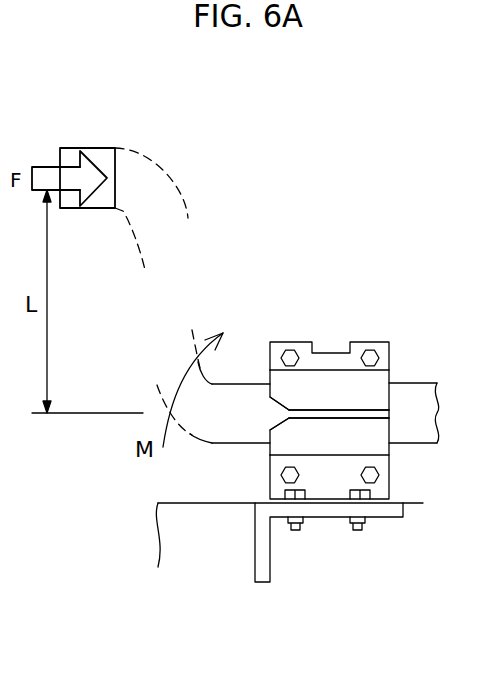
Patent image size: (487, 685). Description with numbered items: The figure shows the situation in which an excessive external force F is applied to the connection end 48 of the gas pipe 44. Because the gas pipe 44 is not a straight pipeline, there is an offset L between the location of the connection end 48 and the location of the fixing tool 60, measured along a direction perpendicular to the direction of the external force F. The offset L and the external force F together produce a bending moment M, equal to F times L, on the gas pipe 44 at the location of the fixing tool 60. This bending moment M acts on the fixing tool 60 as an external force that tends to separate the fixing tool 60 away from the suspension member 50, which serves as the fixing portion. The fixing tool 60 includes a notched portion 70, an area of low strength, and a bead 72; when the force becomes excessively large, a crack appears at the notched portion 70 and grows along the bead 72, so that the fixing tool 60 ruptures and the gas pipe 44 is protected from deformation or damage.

The gas pipe 44 is at (413, 393).
The connection end 48 is at (97, 152).
The suspension member 50 is at (175, 537).
The fixing tool 60 is at (342, 328).
The notched portion 70 is at (267, 413).
The bead 72 is at (385, 413).